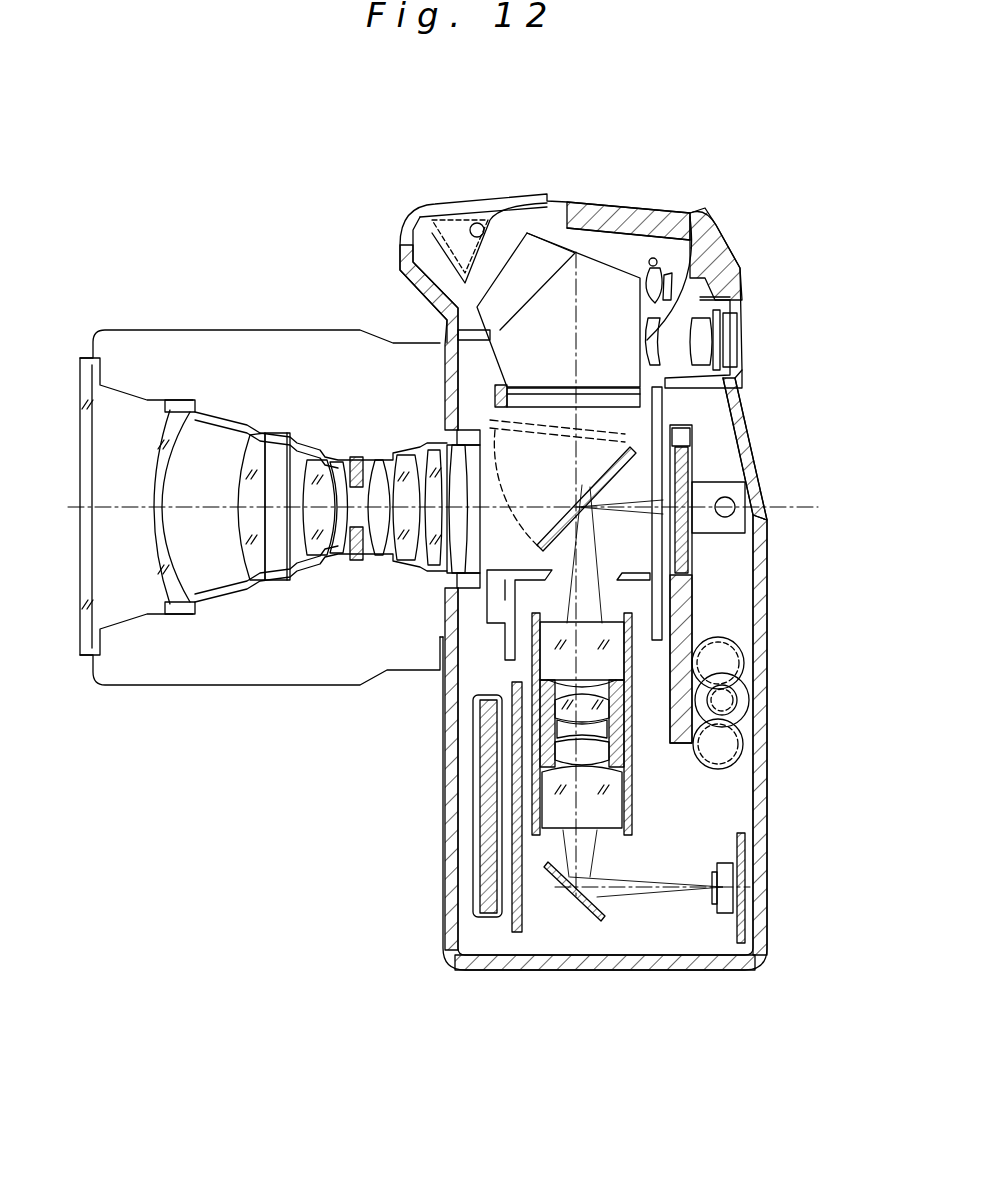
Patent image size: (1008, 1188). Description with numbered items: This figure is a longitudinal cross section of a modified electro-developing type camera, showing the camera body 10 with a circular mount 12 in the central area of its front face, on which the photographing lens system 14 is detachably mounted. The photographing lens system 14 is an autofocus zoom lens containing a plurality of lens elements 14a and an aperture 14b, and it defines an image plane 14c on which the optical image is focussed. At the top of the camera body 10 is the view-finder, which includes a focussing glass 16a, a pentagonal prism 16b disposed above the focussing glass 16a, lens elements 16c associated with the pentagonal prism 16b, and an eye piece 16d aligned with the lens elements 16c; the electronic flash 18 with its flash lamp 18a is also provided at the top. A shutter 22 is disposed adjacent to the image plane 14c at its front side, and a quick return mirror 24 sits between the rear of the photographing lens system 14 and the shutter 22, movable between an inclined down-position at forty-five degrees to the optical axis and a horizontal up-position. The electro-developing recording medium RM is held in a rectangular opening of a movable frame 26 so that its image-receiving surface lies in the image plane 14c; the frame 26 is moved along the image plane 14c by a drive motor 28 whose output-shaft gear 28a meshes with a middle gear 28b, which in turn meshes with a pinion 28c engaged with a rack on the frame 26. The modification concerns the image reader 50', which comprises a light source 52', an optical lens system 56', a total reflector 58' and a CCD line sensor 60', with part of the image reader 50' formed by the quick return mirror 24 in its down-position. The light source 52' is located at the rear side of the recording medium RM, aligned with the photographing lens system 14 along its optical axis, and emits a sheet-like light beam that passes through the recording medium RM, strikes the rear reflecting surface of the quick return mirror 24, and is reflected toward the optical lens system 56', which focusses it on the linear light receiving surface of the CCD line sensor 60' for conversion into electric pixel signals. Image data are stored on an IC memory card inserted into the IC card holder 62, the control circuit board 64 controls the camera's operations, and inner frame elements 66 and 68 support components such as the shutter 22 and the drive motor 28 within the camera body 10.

The camera body 10 is at (775, 965).
The circular mount 12 is at (443, 637).
The photographing lens system 14 is at (237, 325).
The lens elements 14a is at (445, 575).
The aperture 14b is at (353, 457).
The image plane 14c is at (668, 476).
The focussing glass 16a is at (540, 405).
The pentagonal prism 16b is at (597, 277).
The lens elements 16c is at (657, 280).
The eye piece 16d is at (733, 322).
The electronic flash 18 is at (418, 200).
The flash lamp 18a is at (457, 243).
The shutter 22 is at (663, 410).
The quick return mirror 24 is at (548, 527).
The movable frame 26 is at (751, 581).
The drive motor 28 is at (767, 726).
The gear 28a is at (742, 748).
The middle gear 28b is at (750, 699).
The pinion 28c is at (745, 660).
The image reader 50' is at (611, 724).
The light source 52' is at (756, 492).
The optical lens system 56' is at (615, 725).
The total reflector 58' is at (587, 947).
The CCD line sensor 60' is at (719, 933).
The IC card holder 62 is at (483, 920).
The control circuit board 64 is at (517, 933).
The inner frame element 66 is at (630, 573).
The inner frame element 68 is at (540, 567).
The electro-developing recording medium RM is at (683, 550).